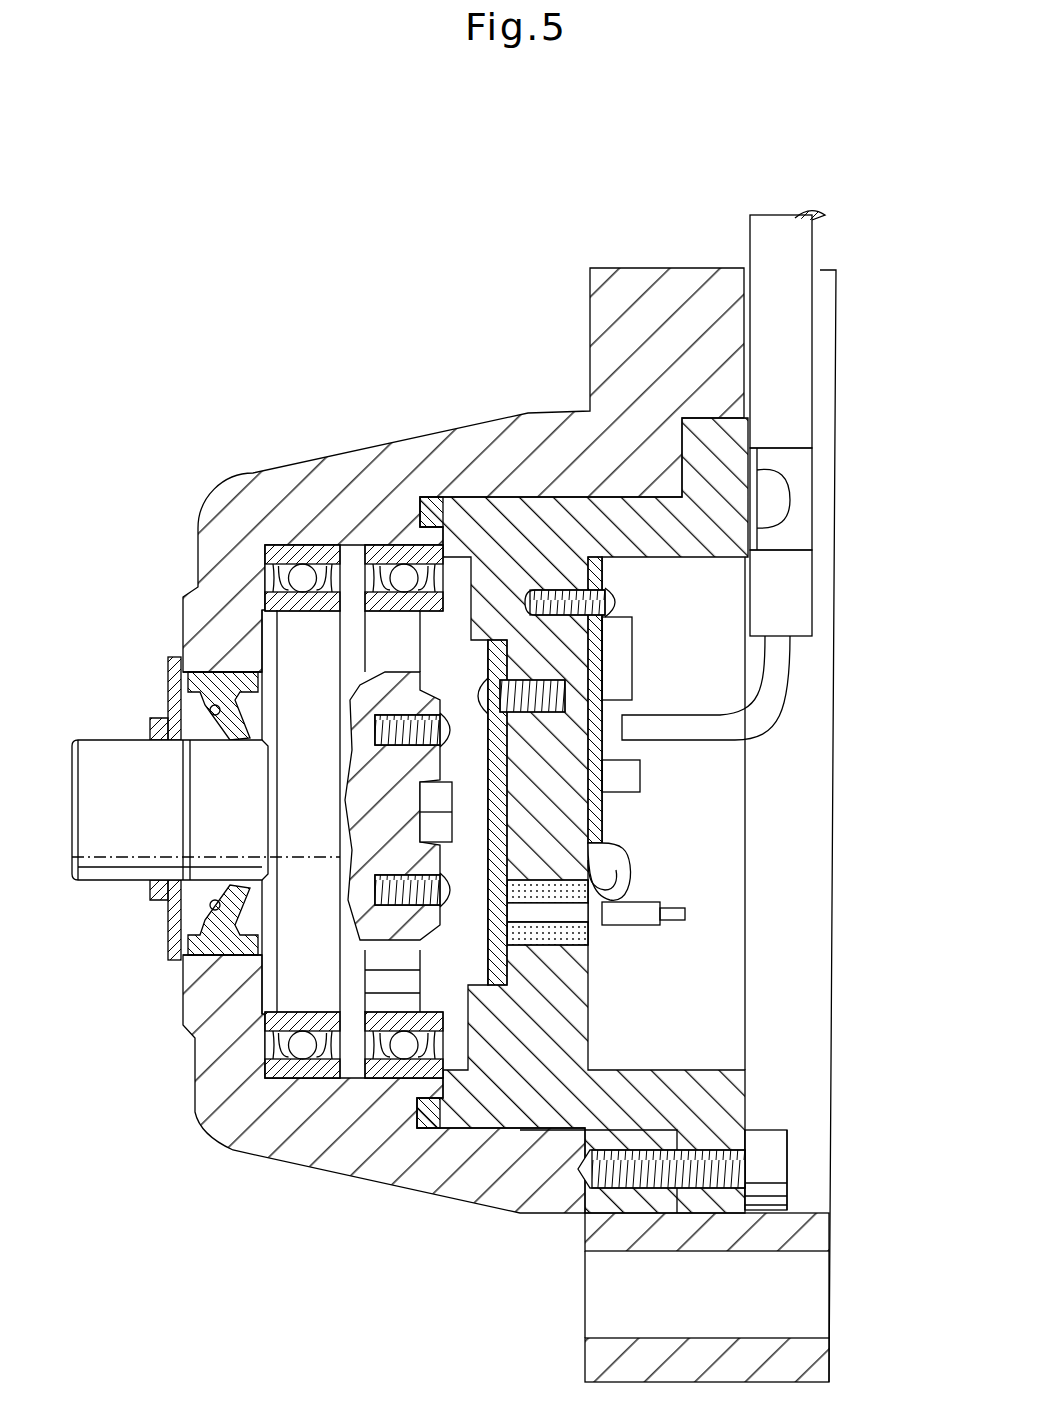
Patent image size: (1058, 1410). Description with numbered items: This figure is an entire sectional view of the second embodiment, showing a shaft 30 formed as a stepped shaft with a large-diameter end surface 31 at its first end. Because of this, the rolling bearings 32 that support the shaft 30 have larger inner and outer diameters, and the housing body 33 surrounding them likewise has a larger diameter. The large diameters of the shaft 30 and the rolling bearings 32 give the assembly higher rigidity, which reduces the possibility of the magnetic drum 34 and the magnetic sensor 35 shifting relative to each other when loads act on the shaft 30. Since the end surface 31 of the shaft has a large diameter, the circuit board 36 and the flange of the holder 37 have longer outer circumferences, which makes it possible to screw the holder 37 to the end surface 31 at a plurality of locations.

The shaft 30 is at (158, 905).
The large-diameter end surface 31 is at (438, 990).
The rolling bearings 32 is at (288, 529).
The housing body 33 is at (540, 440).
The magnetic drum 34 is at (380, 1080).
The magnetic sensor 35 is at (605, 807).
The circuit board 36 is at (588, 960).
The holder 37 is at (285, 1082).